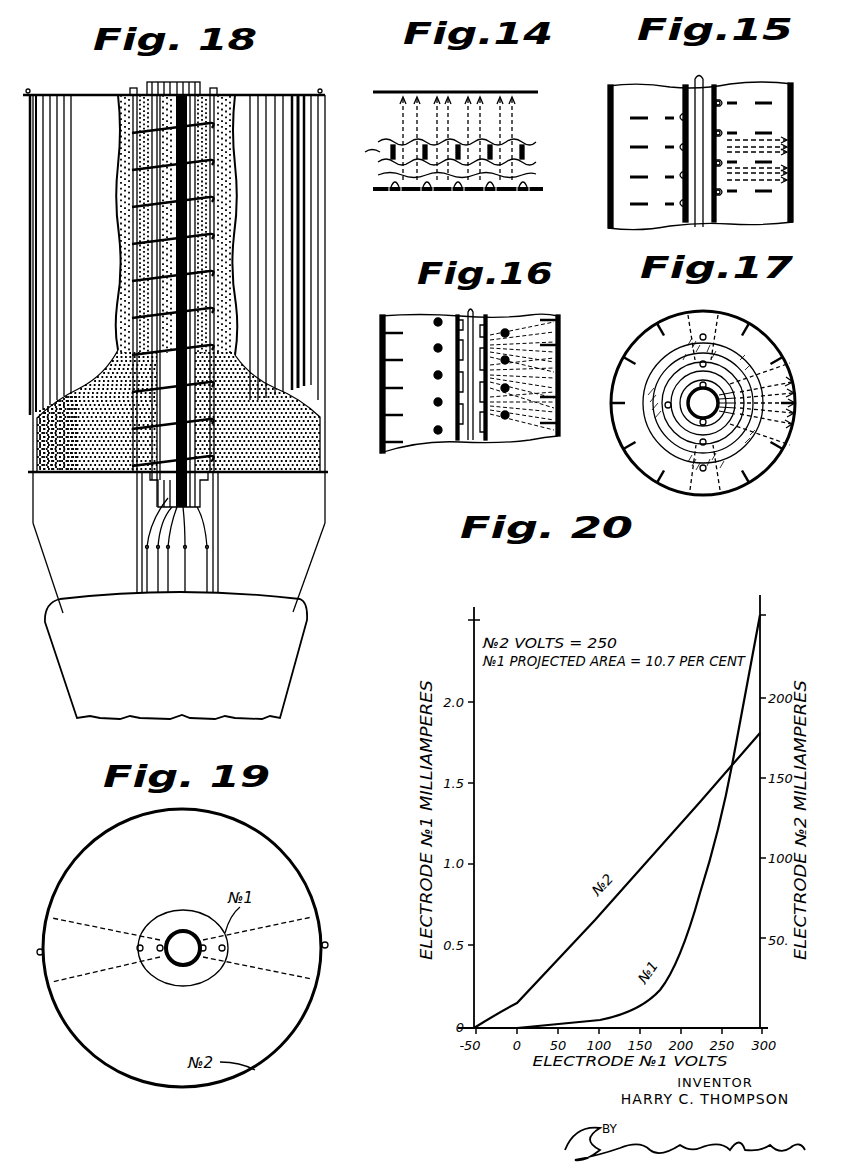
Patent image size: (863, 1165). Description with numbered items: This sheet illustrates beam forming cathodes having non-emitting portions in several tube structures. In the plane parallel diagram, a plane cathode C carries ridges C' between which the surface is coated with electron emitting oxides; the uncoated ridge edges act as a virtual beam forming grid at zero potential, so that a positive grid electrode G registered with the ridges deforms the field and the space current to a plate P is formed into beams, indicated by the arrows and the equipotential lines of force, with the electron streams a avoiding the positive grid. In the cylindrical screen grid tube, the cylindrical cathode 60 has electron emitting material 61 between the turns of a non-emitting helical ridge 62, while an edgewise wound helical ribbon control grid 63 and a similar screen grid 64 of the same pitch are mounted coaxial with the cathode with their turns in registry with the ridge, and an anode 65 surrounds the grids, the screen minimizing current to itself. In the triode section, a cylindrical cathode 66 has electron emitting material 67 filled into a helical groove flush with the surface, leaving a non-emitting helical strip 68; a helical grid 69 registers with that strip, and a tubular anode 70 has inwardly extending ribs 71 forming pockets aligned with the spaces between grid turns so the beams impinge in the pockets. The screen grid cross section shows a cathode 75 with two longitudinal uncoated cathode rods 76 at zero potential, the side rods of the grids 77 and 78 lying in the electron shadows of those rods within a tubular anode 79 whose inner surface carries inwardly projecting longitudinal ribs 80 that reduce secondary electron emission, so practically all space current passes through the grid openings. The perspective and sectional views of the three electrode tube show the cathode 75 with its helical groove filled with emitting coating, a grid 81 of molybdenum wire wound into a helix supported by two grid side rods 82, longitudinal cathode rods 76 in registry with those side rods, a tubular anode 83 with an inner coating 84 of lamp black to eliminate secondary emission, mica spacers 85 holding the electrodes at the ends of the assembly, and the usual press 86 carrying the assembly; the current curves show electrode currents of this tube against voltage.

In FIG. 15, the cylindrical cathode 60 is at (702, 93).
In FIG. 15, the electron emitting material 61 is at (688, 100).
In FIG. 15, the non-emitting helical ridge 62 is at (720, 103).
In FIG. 15, the control grid 63 is at (668, 112).
In FIG. 15, the screen grid 64 is at (637, 112).
In FIG. 15, the anode 65 is at (608, 125).
In FIG. 16, the cylindrical cathode 66 is at (480, 330).
In FIG. 16, the electron emitting material 67 is at (487, 332).
In FIG. 16, the non-emitting helical strip 68 is at (487, 330).
In FIG. 16, the helical grid 69 is at (437, 321).
In FIG. 16, the tubular anode 70 is at (380, 322).
In FIG. 16, the ribs 71 is at (393, 335).
In FIG. 18, the cathode 75 is at (180, 82).
In FIG. 17, the cathode 75 is at (670, 403).
In FIG. 19, the cathode 75 is at (177, 932).
In FIG. 18, the cathode rods 76 is at (155, 513).
In FIG. 17, the cathode rods 76 is at (705, 337).
In FIG. 19, the cathode rods 76 is at (205, 953).
In FIG. 17, the grid 77 is at (723, 377).
In FIG. 17, the grid 78 is at (707, 363).
In FIG. 17, the tubular anode 79 is at (783, 360).
In FIG. 17, the anode fins 80 is at (785, 387).
In FIG. 18, the grid 81 is at (160, 480).
In FIG. 19, the grid 81 is at (152, 922).
In FIG. 18, the grid side rods 82 is at (220, 527).
In FIG. 19, the grid side rods 82 is at (137, 948).
In FIG. 18, the tubular anode 83 is at (310, 360).
In FIG. 18, the coating of lamp black 84 is at (305, 437).
In FIG. 18, the mica spacers 85 is at (257, 92).
In FIG. 18, the press 86 is at (290, 630).
In FIG. 14, the plate P is at (529, 94).
In FIG. 14, the positive grid electrode G is at (533, 148).
In FIG. 14, the electron stream a is at (364, 152).
In FIG. 14, the ridges C' is at (473, 174).
In FIG. 14, the plane cathode C is at (458, 203).